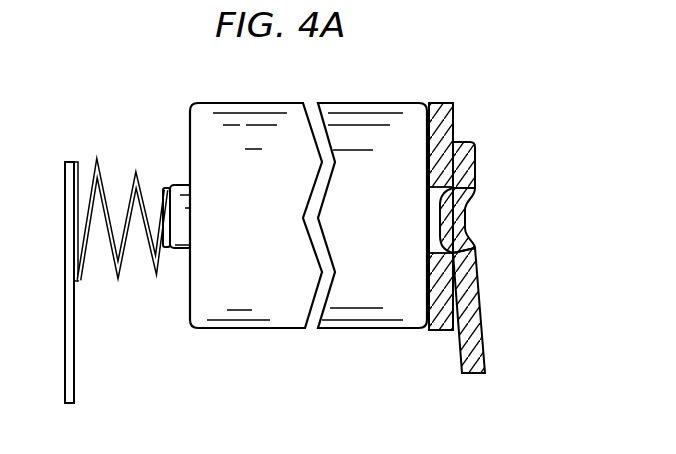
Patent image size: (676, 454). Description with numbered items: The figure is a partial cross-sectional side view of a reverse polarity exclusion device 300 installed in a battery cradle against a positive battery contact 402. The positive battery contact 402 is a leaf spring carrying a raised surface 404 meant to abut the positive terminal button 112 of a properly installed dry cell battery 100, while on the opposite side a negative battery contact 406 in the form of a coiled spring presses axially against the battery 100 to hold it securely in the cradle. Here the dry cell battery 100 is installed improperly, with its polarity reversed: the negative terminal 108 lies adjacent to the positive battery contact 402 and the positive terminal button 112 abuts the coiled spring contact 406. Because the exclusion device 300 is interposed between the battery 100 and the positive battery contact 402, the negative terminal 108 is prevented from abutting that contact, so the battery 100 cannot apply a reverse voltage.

The dry cell battery 100 is at (363, 331).
The negative terminal 108 is at (448, 207).
The positive terminal button 112 is at (182, 235).
The reverse polarity exclusion device 300 is at (442, 103).
The positive battery contact 402 is at (453, 145).
The raised surface 404 is at (463, 249).
The negative battery contact 406 is at (97, 167).